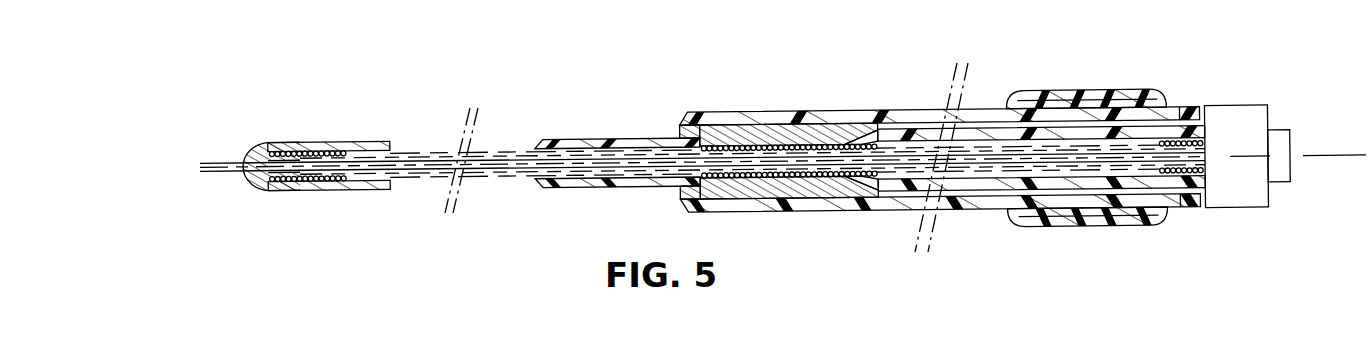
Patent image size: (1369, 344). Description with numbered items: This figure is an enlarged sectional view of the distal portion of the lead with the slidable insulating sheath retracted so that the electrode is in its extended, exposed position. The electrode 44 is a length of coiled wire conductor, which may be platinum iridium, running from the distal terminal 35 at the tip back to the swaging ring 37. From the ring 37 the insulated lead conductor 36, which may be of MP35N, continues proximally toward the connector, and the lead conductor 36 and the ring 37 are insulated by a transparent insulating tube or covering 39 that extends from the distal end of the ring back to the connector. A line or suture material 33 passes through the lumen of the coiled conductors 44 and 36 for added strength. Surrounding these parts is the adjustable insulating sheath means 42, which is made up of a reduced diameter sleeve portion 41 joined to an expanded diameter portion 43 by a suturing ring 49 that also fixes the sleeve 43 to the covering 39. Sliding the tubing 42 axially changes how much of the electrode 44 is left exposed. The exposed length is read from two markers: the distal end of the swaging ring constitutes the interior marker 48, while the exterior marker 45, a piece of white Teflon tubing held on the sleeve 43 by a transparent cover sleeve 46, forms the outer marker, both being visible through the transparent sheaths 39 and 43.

The line or suture material 33 is at (226, 172).
The electrode 44 is at (268, 190).
The distal terminal 35 is at (332, 142).
The reduced diameter sleeve portion 41 is at (590, 187).
The ring 49 is at (678, 130).
The insulating tubing 42 is at (860, 96).
The expanded diameter portion 43 is at (955, 213).
The interior marker 48 is at (710, 145).
The swaging ring 37 is at (773, 180).
The insulating tube or covering 39 is at (880, 178).
The lead conductor 36 is at (1181, 113).
The transparent cover sleeve 46 is at (1037, 225).
The exterior marker 45 is at (1097, 208).